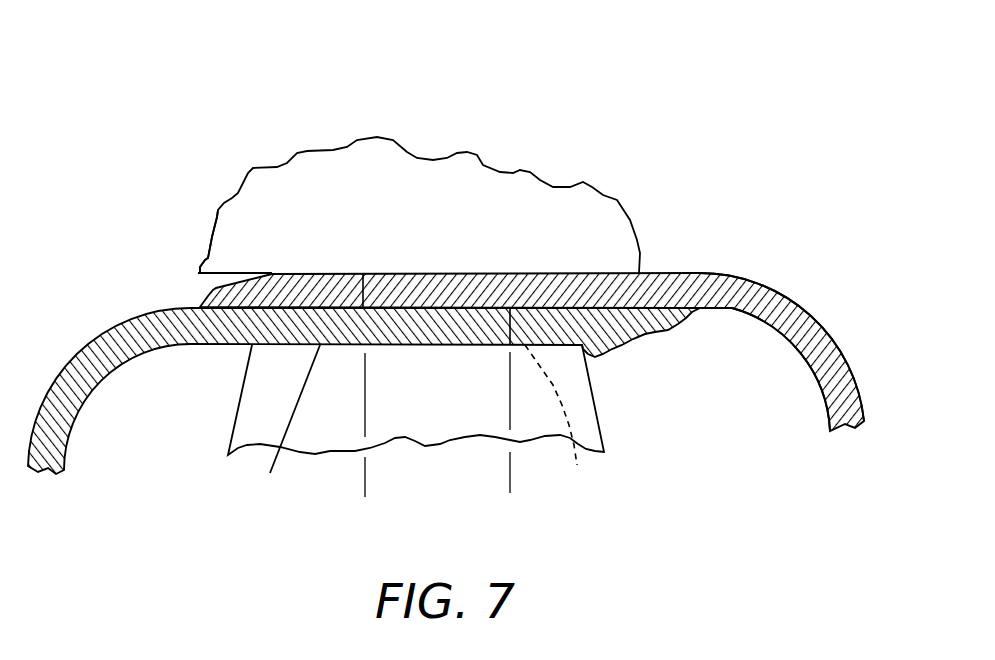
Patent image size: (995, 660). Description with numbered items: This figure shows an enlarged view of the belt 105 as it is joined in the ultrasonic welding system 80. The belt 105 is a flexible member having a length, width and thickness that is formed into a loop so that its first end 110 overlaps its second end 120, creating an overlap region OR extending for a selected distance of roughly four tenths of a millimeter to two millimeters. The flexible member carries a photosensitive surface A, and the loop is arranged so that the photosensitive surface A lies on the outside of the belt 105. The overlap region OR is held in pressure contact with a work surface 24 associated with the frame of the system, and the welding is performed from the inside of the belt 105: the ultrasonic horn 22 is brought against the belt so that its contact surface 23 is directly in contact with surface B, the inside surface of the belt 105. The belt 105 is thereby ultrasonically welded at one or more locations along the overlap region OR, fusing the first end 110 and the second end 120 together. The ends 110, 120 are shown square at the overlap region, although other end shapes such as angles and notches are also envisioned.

The ultrasonic welding system 80 is at (741, 118).
The photosensitive surface A is at (677, 272).
The belt 105 is at (773, 283).
The surface B is at (208, 348).
The second end 120 is at (350, 297).
The work surface 24 is at (235, 273).
The ultrasonic horn 22 is at (592, 413).
The contact surface 23 is at (286, 425).
The first end 110 is at (563, 425).
The overlap region OR is at (508, 486).